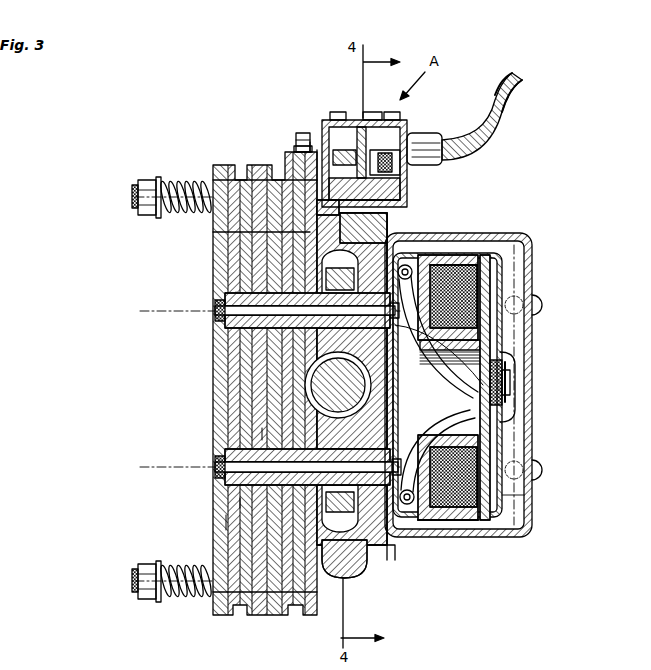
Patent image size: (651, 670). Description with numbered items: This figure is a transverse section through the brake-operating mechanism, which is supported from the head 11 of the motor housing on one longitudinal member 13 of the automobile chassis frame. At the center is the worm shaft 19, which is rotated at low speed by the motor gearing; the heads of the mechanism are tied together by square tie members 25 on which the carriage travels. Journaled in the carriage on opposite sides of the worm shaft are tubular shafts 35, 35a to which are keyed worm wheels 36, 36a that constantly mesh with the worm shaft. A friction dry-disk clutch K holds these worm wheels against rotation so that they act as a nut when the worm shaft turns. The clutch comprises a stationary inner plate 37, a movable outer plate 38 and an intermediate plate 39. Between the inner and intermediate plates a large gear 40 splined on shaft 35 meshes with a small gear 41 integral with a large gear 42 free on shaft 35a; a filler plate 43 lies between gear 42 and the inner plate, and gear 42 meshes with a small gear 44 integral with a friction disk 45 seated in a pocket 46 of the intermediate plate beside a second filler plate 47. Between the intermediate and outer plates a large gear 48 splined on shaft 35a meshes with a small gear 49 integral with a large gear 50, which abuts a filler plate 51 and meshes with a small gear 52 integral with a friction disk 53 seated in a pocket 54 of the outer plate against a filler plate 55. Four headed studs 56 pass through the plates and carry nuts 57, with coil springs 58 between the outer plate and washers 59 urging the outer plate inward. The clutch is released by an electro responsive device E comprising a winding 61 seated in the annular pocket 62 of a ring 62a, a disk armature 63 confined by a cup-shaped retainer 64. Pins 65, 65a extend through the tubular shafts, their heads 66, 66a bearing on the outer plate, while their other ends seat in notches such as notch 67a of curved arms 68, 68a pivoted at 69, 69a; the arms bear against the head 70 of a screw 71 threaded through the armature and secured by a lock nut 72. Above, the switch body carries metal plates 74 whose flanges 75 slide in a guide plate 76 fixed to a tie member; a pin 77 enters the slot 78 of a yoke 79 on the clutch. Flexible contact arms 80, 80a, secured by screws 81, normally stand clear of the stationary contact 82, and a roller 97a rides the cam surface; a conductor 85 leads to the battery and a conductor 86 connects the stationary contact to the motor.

The head 11 is at (393, 216).
The longitudinal member 13 is at (523, 262).
The worm shaft 19 is at (336, 386).
The tie members 25 is at (356, 566).
The tubular shaft 35 is at (424, 402).
The tubular shaft 35a is at (434, 362).
The worm wheel 36 is at (390, 536).
The worm wheel 36a is at (382, 226).
The inner plate 37 is at (310, 617).
The outer plate 38 is at (230, 617).
The intermediate plate 39 is at (272, 617).
The gear 40 is at (313, 604).
The gear 41 is at (248, 255).
The gear 42 is at (258, 233).
The filler plate 43 is at (290, 155).
The gear 44 is at (240, 544).
The friction disk 45 is at (226, 522).
The pocket 46 is at (240, 503).
The filler plate 47 is at (293, 607).
The gear 48 is at (237, 372).
The gear 49 is at (262, 434).
The gear 50 is at (240, 353).
The filler plate 51 is at (248, 608).
The gear 52 is at (236, 297).
The friction disk 53 is at (228, 272).
The pocket 54 is at (236, 262).
The filler plate 55 is at (225, 166).
The headed studs 56 is at (137, 197).
The nuts 57 is at (147, 180).
The coil springs 58 is at (188, 182).
The washers 59 is at (160, 176).
The winding 61 is at (455, 500).
The annular pocket 62 is at (440, 500).
The ring 62a is at (478, 522).
The disk armature 63 is at (520, 503).
The retainer 64 is at (500, 262).
The pin 65 is at (228, 468).
The pin 65a is at (225, 321).
The head 66 is at (228, 478).
The head 66a is at (222, 303).
The notch 67a is at (432, 265).
The curved arm 68 is at (508, 428).
The curved arm 68a is at (482, 345).
The pivot 69 is at (410, 505).
The pivot 69a is at (410, 266).
The head 70 is at (497, 360).
The screw 71 is at (503, 377).
The lock nut 72 is at (511, 393).
The metal plates 74 is at (335, 114).
The flanges 75 is at (300, 178).
The guide plate 76 is at (402, 183).
The pin 77 is at (298, 146).
The slot 78 is at (316, 142).
The yoke 79 is at (302, 134).
The contact arm 80 is at (362, 125).
The contact arm 80a is at (406, 128).
The screws 81 is at (383, 152).
The stationary contact 82 is at (340, 150).
The conductor 85 is at (462, 152).
The conductor 86 is at (508, 80).
The roller 97a is at (404, 172).
The electro responsive device E is at (483, 256).
The clutch K is at (208, 407).